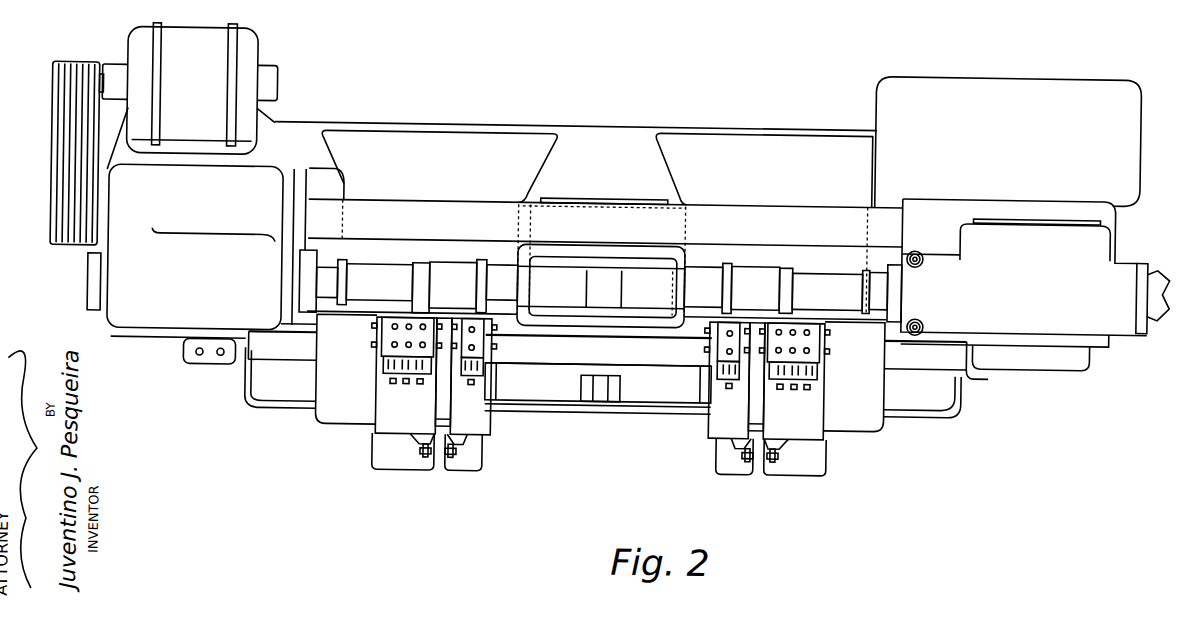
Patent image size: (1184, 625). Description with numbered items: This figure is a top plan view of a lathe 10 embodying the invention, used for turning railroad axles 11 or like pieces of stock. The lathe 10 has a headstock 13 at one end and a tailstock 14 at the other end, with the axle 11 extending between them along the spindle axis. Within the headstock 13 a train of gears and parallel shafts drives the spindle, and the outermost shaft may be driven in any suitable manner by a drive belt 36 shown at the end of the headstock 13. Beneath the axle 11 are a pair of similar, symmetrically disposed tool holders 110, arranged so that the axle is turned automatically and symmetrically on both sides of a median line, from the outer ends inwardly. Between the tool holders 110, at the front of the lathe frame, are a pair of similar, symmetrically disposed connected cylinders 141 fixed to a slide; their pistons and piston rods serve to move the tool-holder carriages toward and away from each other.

The lathe 10 is at (607, 438).
The railroad axle 11 is at (763, 253).
The headstock 13 is at (159, 312).
The tailstock 14 is at (1053, 309).
The drive belt 36 is at (61, 121).
The tool holders 110 is at (410, 396).
The cylinders 141 is at (548, 386).